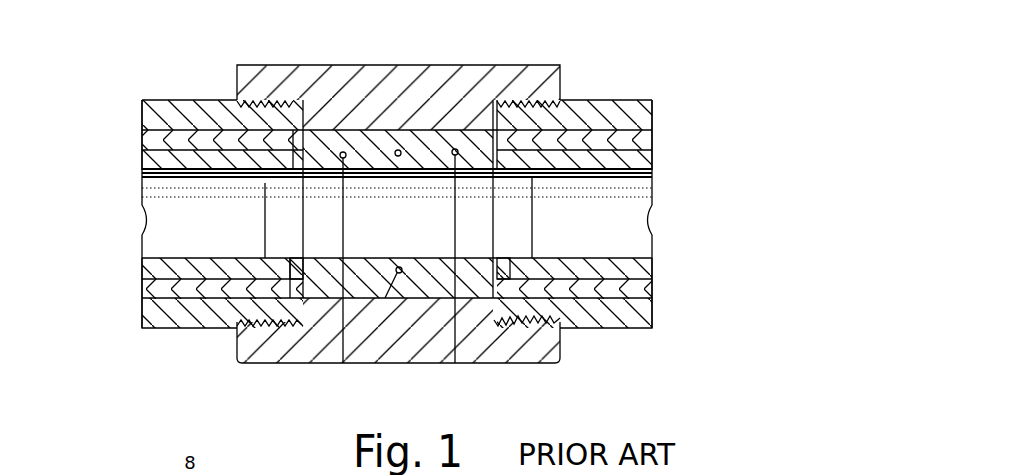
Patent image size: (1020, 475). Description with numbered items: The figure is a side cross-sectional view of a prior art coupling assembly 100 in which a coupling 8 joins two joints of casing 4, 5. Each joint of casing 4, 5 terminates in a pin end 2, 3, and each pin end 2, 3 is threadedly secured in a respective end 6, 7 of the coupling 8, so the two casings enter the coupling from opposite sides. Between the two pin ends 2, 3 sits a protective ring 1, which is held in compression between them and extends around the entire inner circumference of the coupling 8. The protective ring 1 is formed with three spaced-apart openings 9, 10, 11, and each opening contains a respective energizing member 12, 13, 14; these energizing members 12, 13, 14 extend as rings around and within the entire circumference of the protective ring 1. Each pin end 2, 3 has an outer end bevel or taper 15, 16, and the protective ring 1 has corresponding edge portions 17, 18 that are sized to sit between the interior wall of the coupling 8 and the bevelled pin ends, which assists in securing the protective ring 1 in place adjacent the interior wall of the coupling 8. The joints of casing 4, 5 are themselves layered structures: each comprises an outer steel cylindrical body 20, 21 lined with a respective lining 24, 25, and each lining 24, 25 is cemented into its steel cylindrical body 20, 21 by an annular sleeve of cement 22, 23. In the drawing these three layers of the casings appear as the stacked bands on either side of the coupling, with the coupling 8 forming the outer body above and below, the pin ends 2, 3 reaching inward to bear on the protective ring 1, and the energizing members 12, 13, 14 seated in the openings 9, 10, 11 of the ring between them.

The coupling assembly 100 is at (480, 58).
The protective ring 1 is at (374, 282).
The pin end 2 is at (245, 99).
The pin end 3 is at (548, 336).
The joint of casing 4 is at (150, 100).
The joint of casing 5 is at (640, 100).
The end of coupling 6 is at (252, 101).
The end of coupling 7 is at (552, 88).
The coupling 8 is at (345, 65).
The opening 9 is at (345, 160).
The opening 10 is at (418, 128).
The opening 11 is at (448, 262).
The energizing member 12 is at (343, 363).
The energizing member 13 is at (398, 160).
The energizing member 14 is at (455, 363).
The outer end bevel 15 is at (287, 211).
The outer end bevel 16 is at (508, 222).
The edge portion 17 is at (292, 262).
The edge portion 18 is at (516, 262).
The outer steel cylindrical body 20 is at (625, 312).
The outer steel cylindrical body 21 is at (162, 318).
The annular sleeve of cement 22 is at (625, 290).
The annular sleeve of cement 23 is at (170, 290).
The lining 24 is at (625, 268).
The lining 25 is at (170, 268).